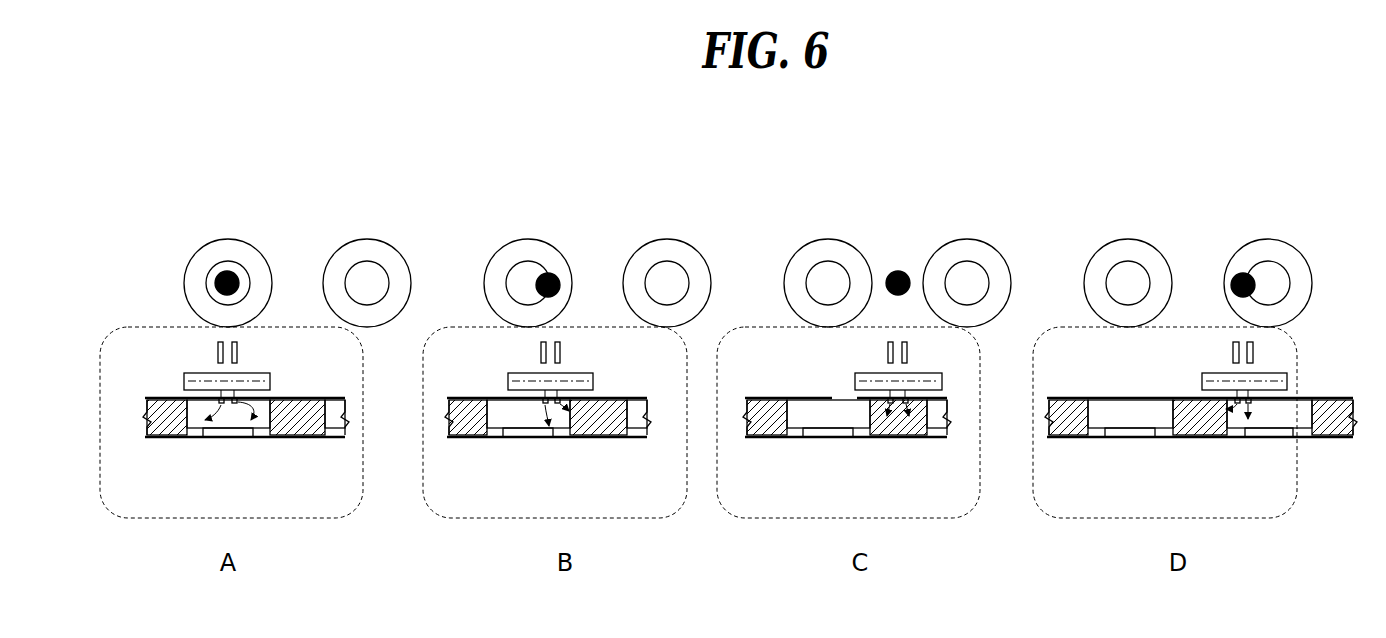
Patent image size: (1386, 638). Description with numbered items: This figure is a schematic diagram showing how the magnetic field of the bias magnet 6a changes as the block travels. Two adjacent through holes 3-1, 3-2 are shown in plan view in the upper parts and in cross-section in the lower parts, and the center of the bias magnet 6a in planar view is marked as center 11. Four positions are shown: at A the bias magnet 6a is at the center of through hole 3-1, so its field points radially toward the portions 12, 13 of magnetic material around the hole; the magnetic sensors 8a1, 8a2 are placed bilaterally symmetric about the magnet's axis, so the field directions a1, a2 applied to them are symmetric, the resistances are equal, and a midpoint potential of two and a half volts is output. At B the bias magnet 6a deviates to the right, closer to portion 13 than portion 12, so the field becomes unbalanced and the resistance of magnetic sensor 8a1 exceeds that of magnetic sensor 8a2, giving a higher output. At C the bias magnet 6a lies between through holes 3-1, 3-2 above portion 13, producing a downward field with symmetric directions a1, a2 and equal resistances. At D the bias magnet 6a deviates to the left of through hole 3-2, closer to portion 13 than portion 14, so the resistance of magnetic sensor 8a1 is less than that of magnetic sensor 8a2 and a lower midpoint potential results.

The through hole 3-1 is at (236, 240).
The through hole 3-2 is at (372, 240).
The center of the bias magnet 11 is at (235, 273).
The direction of the magnetic field applied to magnetic sensor 8a1 a1 is at (214, 350).
The direction of the magnetic field applied to magnetic sensor 8a2 a2 is at (243, 350).
The bias magnet 6a is at (253, 373).
The portion of the magnetic material 12 is at (160, 428).
The portion of the magnetic material 13 is at (306, 412).
The portion of the magnetic material 14 is at (1343, 412).
The magnetic sensor 8a1 is at (221, 406).
The magnetic sensor 8a2 is at (239, 406).